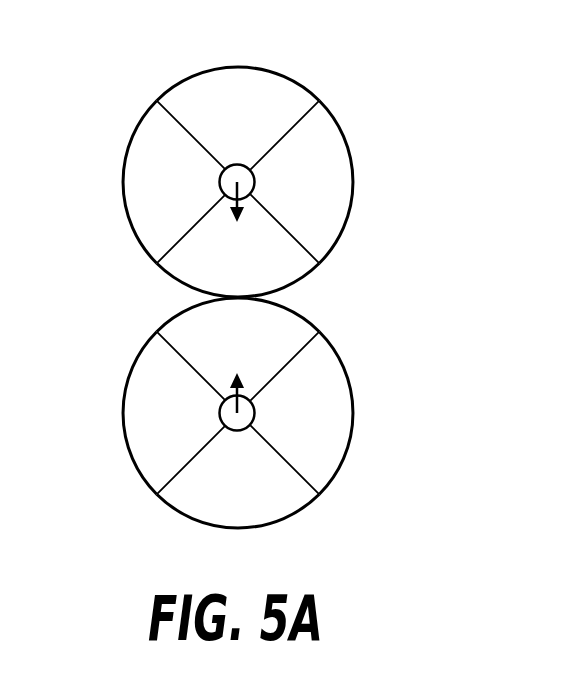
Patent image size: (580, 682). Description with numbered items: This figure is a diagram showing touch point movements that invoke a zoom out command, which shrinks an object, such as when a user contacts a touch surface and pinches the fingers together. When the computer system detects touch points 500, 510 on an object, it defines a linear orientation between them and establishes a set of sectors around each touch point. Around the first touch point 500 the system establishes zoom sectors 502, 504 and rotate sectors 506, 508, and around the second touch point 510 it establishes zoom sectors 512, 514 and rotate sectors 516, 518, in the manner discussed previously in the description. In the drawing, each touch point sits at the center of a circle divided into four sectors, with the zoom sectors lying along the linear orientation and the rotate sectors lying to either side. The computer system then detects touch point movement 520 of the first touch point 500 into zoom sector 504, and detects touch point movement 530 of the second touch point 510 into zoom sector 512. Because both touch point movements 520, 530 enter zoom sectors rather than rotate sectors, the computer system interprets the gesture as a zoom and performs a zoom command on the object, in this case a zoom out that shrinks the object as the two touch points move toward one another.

The touch point 500 is at (237, 182).
The zoom sector 502 is at (257, 70).
The zoom sector 504 is at (183, 286).
The rotate sector 506 is at (123, 174).
The rotate sector 508 is at (353, 181).
The touch point movement 520 is at (240, 217).
The touch point 510 is at (237, 413).
The zoom sector 512 is at (310, 319).
The zoom sector 514 is at (201, 522).
The rotate sector 516 is at (123, 406).
The rotate sector 518 is at (353, 426).
The touch point movement 530 is at (240, 385).